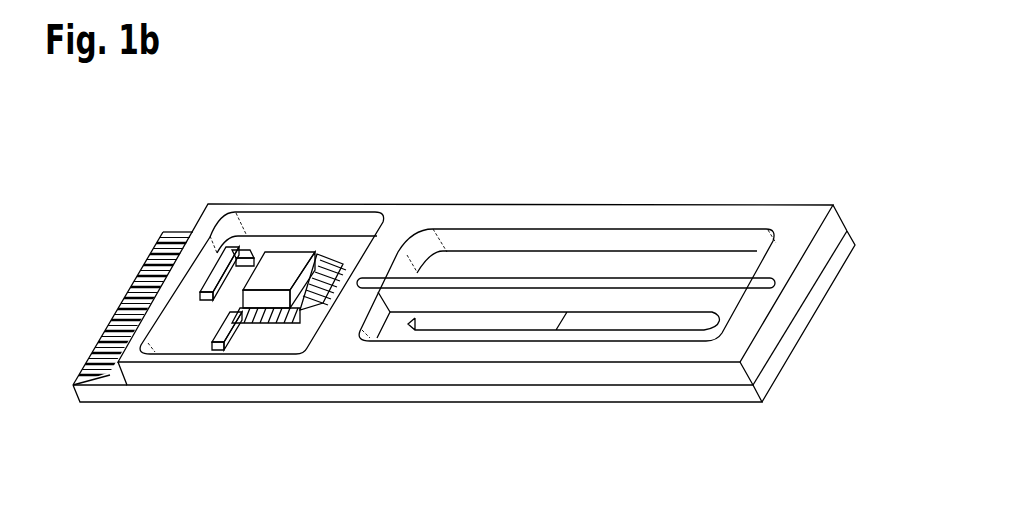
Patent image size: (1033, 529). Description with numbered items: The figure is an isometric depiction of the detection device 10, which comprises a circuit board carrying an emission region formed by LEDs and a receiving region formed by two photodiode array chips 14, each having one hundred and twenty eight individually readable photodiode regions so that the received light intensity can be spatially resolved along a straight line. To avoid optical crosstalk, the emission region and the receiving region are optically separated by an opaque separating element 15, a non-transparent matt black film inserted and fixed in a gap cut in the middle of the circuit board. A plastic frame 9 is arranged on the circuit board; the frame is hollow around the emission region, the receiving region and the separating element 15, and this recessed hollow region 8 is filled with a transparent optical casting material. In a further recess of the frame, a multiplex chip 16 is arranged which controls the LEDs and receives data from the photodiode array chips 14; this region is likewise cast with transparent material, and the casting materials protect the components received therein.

The recessed hollow region 8 is at (735, 263).
The plastic frame 9 is at (673, 242).
The detection device 10 is at (302, 372).
The photodiode array chip 14 is at (617, 318).
The separating element 15 is at (470, 300).
The multiplex chip 16 is at (278, 265).